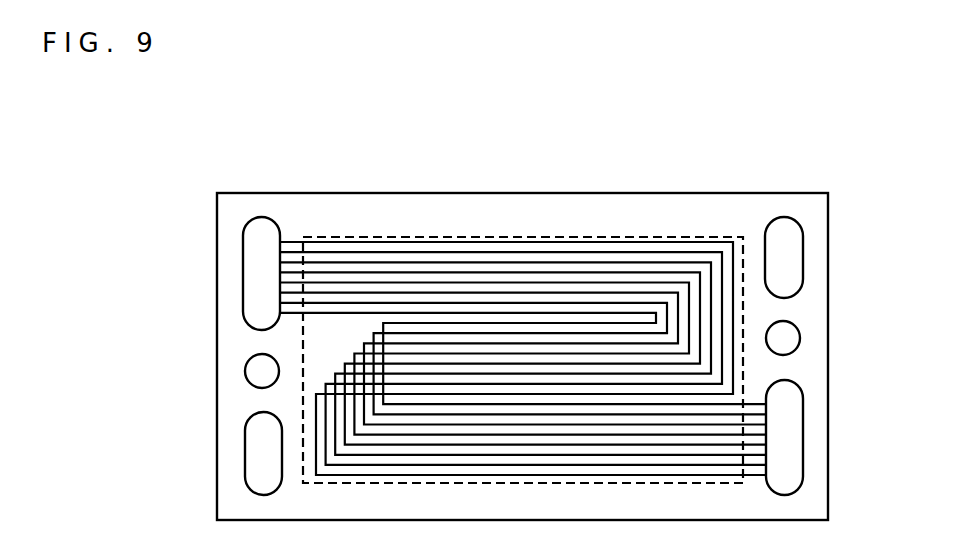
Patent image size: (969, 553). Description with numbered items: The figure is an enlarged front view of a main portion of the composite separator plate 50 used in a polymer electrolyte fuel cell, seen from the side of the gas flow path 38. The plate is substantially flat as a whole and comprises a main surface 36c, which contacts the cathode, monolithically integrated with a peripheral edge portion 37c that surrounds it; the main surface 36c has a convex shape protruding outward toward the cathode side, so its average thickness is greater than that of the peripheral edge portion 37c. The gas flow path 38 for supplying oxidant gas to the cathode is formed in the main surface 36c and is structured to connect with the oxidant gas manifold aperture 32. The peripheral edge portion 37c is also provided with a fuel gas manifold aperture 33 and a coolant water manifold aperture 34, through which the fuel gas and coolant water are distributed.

The composite separator plate 50 is at (627, 195).
The peripheral edge portion 37c is at (557, 208).
The main surface 36c is at (475, 236).
The gas flow path 38 is at (385, 250).
The oxidant gas manifold aperture 32 is at (255, 262).
The fuel gas manifold aperture 33 is at (258, 452).
The coolant water manifold aperture 34 is at (257, 372).